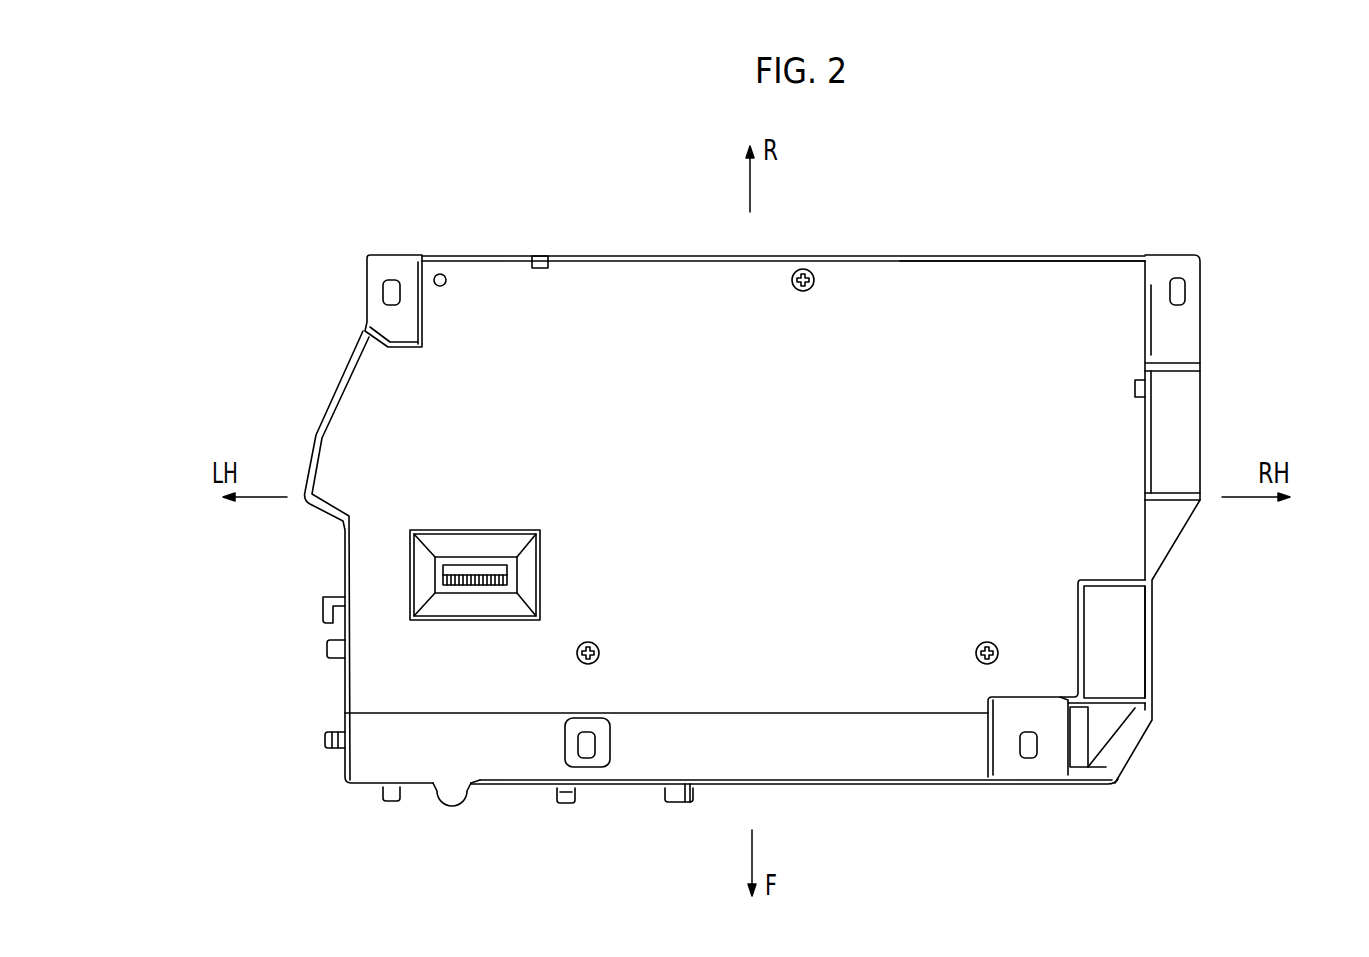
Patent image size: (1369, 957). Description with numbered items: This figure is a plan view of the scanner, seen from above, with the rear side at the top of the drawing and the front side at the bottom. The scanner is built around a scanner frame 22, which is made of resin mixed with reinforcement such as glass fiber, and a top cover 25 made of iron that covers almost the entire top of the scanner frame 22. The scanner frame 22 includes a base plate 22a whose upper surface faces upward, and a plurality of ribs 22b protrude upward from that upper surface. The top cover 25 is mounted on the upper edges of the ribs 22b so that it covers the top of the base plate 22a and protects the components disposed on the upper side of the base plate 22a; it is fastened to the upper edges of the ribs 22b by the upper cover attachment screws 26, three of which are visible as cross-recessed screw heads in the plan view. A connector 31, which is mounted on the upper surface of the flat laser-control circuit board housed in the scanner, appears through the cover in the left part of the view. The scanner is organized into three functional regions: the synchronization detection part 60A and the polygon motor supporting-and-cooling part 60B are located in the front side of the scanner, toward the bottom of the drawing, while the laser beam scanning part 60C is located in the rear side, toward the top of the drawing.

The scanner frame 22 is at (1178, 323).
The base plate 22a is at (1128, 677).
The ribs 22b is at (1035, 787).
The top cover 25 is at (977, 257).
The upper cover attachment screws 26 is at (812, 285).
The connector 31 is at (467, 590).
The synchronization detection part 60A is at (477, 795).
The polygon motor supporting-and-cooling part 60B is at (843, 793).
The laser beam scanning part 60C is at (877, 250).